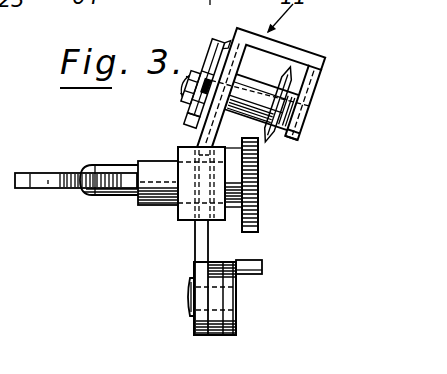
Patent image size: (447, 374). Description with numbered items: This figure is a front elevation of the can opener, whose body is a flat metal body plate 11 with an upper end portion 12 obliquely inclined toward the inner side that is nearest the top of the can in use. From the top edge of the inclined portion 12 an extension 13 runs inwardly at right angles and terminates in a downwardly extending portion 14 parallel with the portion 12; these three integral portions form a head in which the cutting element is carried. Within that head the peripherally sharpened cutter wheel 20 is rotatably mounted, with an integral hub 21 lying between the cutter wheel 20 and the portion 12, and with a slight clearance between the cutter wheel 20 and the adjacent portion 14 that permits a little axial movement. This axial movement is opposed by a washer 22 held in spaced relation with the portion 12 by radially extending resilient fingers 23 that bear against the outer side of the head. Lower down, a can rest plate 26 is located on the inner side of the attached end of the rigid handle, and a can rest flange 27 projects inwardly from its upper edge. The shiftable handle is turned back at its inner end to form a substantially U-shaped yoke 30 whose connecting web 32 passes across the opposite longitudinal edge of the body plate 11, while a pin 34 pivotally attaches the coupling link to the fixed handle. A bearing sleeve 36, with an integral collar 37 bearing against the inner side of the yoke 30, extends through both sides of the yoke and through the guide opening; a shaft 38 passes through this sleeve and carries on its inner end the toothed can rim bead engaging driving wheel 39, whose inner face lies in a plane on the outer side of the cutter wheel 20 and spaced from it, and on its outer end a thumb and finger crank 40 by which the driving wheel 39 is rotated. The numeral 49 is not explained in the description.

The body plate 11 is at (203, 250).
The inclined portion of body plate 12 is at (233, 50).
The extension 13 is at (280, 38).
The downwardly extending portion 14 is at (312, 81).
The cutter wheel 20 is at (292, 145).
The hub 21 is at (258, 83).
The washer 22 is at (197, 101).
The resilient fingers 23 is at (193, 125).
The can rest plate 26 is at (236, 317).
The can rest flange 27 is at (262, 270).
The yoke 30 is at (177, 210).
The web portion 32 is at (207, 208).
The pin 34 is at (192, 293).
The bearing sleeve 36 is at (152, 163).
The collar 37 is at (232, 178).
The shaft 38 is at (122, 196).
The driving wheel 39 is at (260, 203).
The thumb and finger crank 40 is at (28, 170).
The element 49 is at (122, 365).